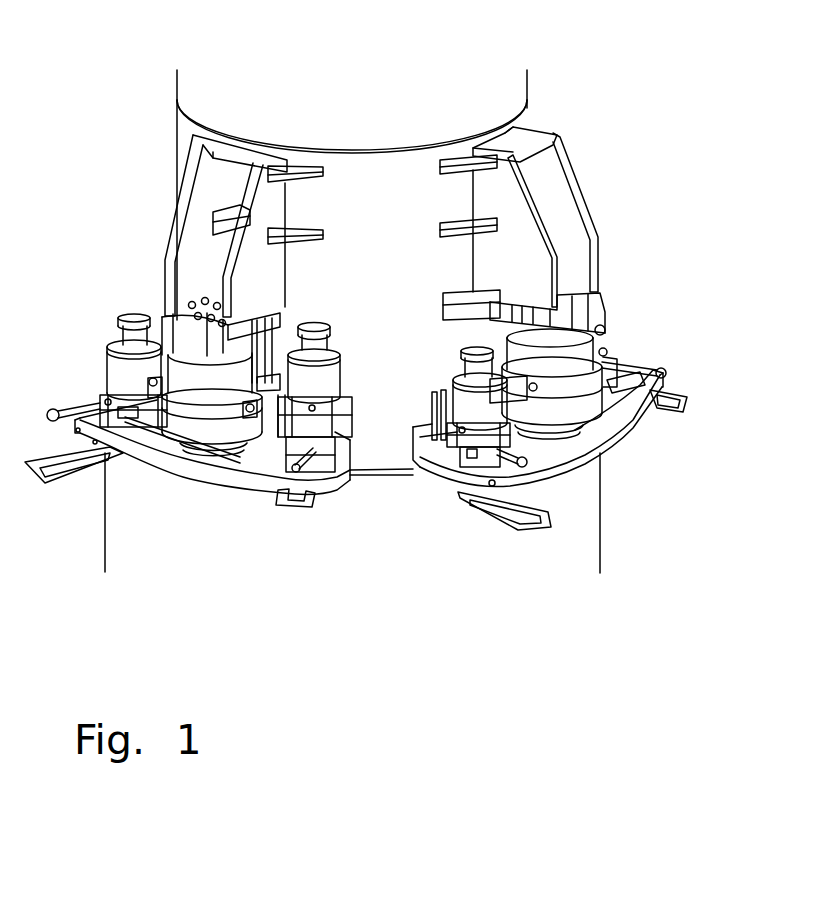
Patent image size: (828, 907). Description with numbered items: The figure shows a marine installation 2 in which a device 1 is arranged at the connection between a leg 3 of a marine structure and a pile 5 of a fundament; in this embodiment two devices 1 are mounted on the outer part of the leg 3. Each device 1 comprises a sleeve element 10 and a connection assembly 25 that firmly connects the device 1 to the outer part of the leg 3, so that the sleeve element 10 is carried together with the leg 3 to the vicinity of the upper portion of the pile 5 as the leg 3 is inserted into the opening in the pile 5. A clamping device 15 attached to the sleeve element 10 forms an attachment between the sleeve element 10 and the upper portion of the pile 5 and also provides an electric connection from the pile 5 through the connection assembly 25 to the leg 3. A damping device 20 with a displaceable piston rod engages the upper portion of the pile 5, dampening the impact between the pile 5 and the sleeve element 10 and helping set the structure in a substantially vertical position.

The device 1 is at (90, 258).
The marine installation 2 is at (115, 95).
The leg 3 is at (400, 190).
The pile 5 is at (413, 562).
The sleeve element 10 is at (188, 475).
The clamping device 15 is at (320, 377).
The damping device 20 is at (190, 377).
The connection assembly 25 is at (170, 240).